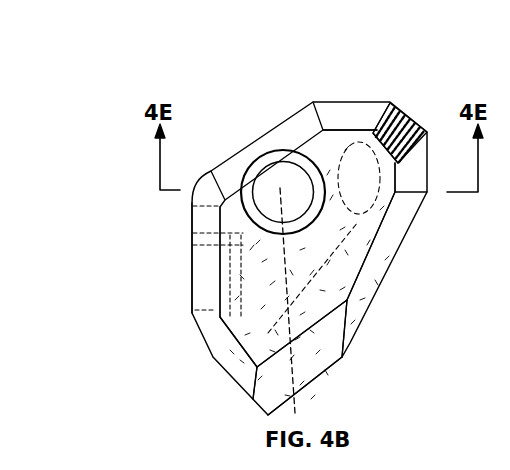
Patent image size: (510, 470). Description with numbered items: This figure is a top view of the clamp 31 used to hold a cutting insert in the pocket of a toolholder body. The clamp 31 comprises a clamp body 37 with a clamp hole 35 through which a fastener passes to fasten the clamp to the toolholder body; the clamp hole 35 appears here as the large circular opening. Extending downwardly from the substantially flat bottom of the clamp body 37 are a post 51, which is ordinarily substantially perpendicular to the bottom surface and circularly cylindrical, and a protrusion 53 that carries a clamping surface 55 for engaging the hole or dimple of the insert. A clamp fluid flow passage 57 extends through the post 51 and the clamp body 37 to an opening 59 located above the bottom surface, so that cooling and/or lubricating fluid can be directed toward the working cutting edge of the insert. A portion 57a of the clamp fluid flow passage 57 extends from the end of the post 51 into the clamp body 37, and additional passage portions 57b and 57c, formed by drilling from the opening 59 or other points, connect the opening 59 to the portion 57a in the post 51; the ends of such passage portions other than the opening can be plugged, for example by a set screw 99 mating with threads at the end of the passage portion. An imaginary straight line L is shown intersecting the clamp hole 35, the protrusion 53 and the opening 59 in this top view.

The clamp 31 is at (253, 71).
The clamp hole 35 is at (273, 187).
The clamp body 37 is at (191, 288).
The post 51 is at (386, 210).
The protrusion 53 is at (315, 330).
The clamping surface 55 is at (290, 308).
The clamp fluid flow passage 57 is at (250, 321).
The portion of the clamp fluid flow passage 57a is at (377, 199).
The passage portion 57b is at (332, 225).
The passage portion 57c is at (249, 392).
The opening 59 is at (296, 392).
The set screw 99 is at (398, 130).
The imaginary straight line L is at (285, 206).